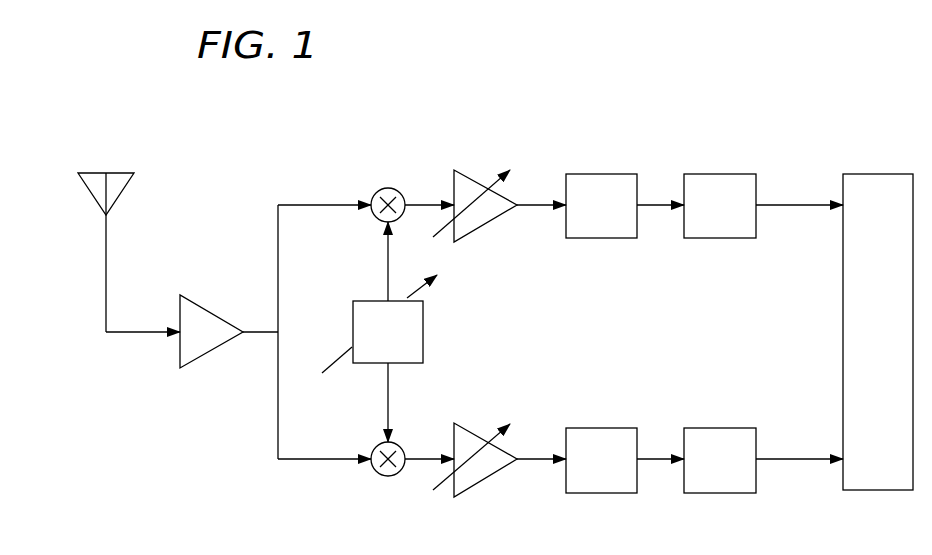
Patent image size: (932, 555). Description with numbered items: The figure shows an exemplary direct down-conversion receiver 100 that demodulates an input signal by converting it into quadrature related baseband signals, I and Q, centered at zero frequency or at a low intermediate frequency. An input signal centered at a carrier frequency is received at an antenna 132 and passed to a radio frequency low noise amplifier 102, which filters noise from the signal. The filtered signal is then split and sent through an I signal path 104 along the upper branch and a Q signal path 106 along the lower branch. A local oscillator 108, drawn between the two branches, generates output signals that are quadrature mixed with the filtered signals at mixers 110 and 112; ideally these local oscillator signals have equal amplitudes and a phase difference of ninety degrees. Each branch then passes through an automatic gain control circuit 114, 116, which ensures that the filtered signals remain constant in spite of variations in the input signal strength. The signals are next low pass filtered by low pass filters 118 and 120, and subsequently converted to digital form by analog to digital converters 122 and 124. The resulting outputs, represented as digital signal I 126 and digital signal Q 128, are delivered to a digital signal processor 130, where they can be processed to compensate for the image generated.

The direct down-conversion receiver 100 is at (543, 78).
The radio frequency low noise amplifier 102 is at (195, 362).
The I signal path 104 is at (332, 203).
The Q signal path 106 is at (322, 462).
The local oscillator 108 is at (423, 333).
The mixer 110 is at (390, 188).
The mixer 112 is at (388, 478).
The automatic gain control circuit 114 is at (468, 170).
The automatic gain control circuit 116 is at (470, 490).
The low pass filter 118 is at (600, 172).
The low pass filter 120 is at (595, 495).
The analog to digital converter 122 is at (720, 172).
The analog to digital converter 124 is at (714, 495).
The digital signal I 126 is at (797, 212).
The digital signal Q 128 is at (797, 465).
The digital signal processor 130 is at (878, 172).
The antenna 132 is at (120, 172).